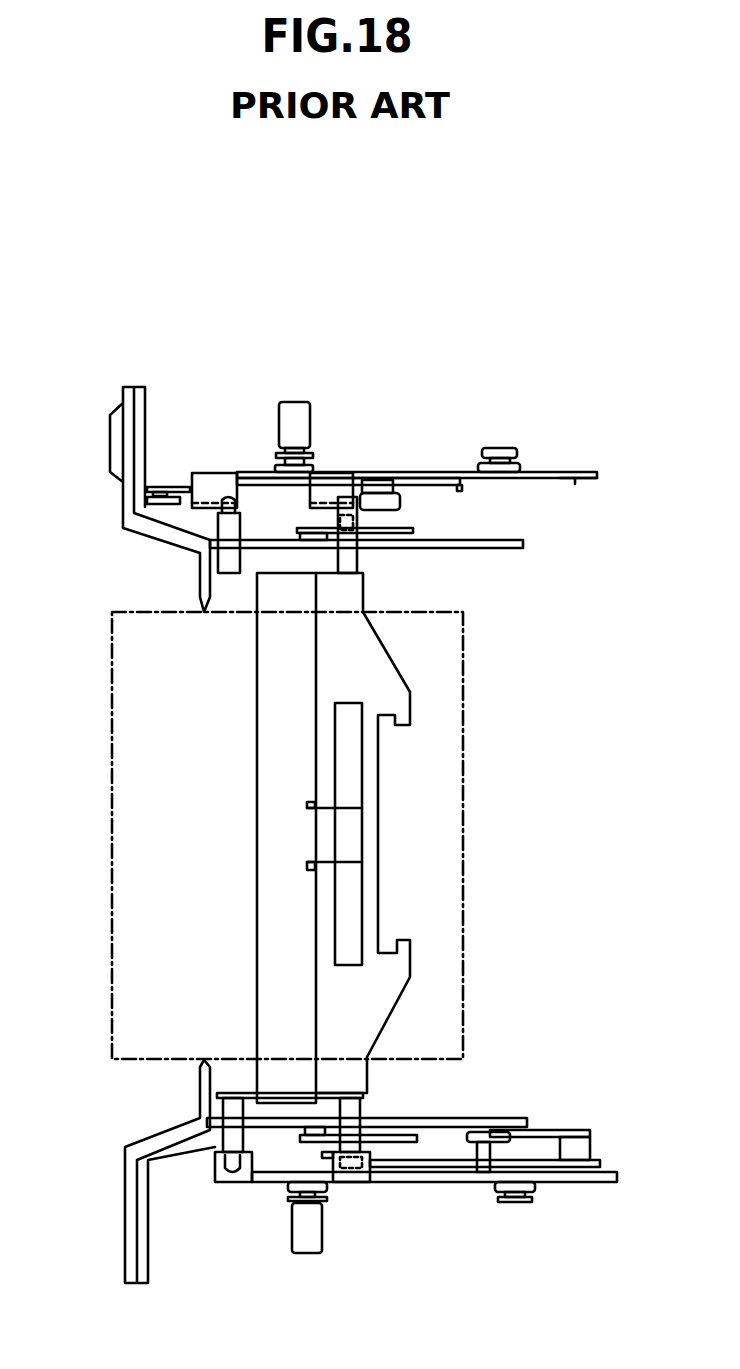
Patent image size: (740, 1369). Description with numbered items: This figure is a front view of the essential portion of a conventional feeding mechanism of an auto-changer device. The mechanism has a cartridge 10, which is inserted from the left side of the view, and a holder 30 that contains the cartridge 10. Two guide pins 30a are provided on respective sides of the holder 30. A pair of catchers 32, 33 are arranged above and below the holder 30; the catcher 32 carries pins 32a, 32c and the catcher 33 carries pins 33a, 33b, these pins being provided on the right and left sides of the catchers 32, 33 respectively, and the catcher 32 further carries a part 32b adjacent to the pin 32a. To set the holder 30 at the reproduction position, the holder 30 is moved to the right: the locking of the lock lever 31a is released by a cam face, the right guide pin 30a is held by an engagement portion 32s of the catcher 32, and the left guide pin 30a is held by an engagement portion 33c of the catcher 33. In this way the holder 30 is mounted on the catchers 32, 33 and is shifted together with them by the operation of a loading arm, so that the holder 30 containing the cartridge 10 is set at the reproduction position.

The cartridge 10 is at (435, 898).
The holder 30 is at (380, 680).
The guide pins 30a is at (217, 527).
The lock lever 31a is at (400, 523).
The catcher 32 is at (605, 1182).
The pin 32a is at (313, 1245).
The lower roller shaft 32b is at (292, 1198).
The pin 32c is at (513, 1202).
The engagement portion 32s is at (230, 1183).
The catcher 33 is at (446, 440).
The pin 33a is at (287, 400).
The pin 33b is at (495, 447).
The engagement portion 33c is at (222, 480).